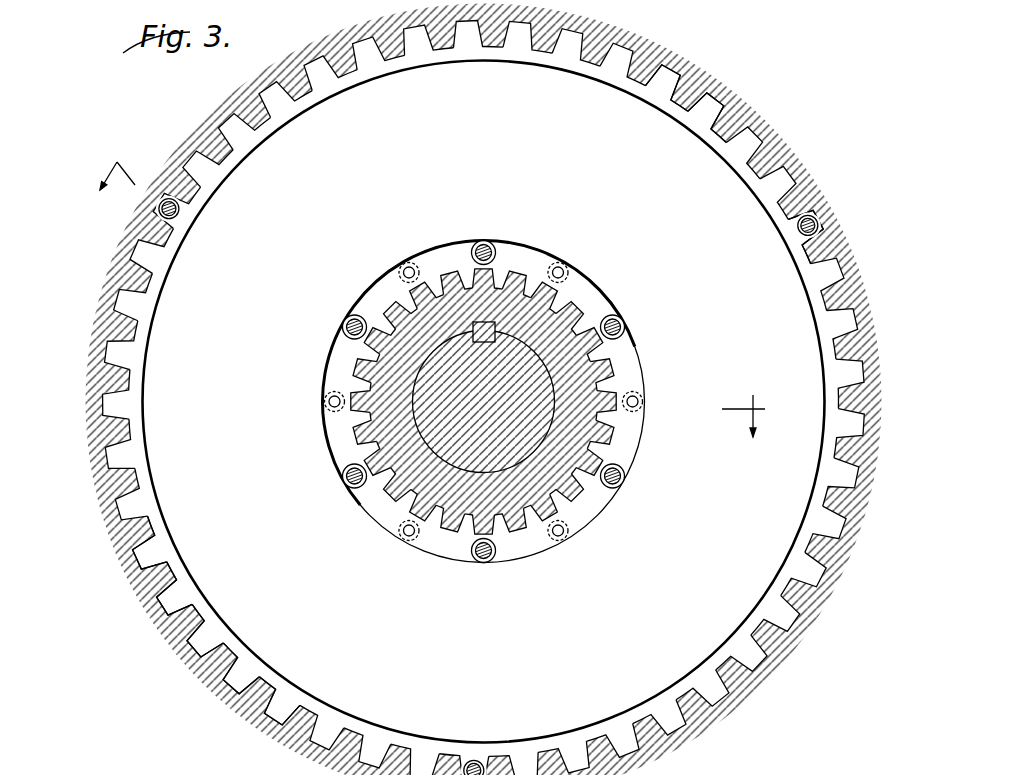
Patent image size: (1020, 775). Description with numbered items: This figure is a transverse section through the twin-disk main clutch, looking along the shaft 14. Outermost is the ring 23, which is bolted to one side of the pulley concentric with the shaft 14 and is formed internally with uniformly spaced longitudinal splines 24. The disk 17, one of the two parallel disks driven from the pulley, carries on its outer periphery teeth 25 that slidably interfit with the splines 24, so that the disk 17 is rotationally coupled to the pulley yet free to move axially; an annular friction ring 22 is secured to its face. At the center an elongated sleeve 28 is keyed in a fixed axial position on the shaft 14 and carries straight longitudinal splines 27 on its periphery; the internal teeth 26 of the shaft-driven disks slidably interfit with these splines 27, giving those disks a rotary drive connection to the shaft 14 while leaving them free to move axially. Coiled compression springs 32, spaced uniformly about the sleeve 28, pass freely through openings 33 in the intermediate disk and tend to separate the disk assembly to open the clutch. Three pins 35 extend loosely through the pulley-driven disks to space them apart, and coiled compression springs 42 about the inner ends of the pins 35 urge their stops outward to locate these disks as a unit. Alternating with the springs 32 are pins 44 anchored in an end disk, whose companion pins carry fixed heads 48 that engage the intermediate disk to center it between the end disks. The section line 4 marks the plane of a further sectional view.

The section line 4 is at (436, 292).
The shaft 14 is at (540, 385).
The disk 17 is at (683, 115).
The annular friction rings 22 is at (730, 182).
The ring 23 is at (653, 47).
The splines 24 is at (683, 92).
The teeth 25 is at (827, 268).
The teeth 26 is at (527, 517).
The splines 27 is at (547, 513).
The sleeve 28 is at (582, 422).
The coiled compression springs 32 is at (500, 247).
The openings 33 is at (484, 248).
The pins 35 is at (182, 209).
The coiled compression springs 42 is at (172, 217).
The pins 44 is at (641, 405).
The fixed heads 48 is at (572, 278).